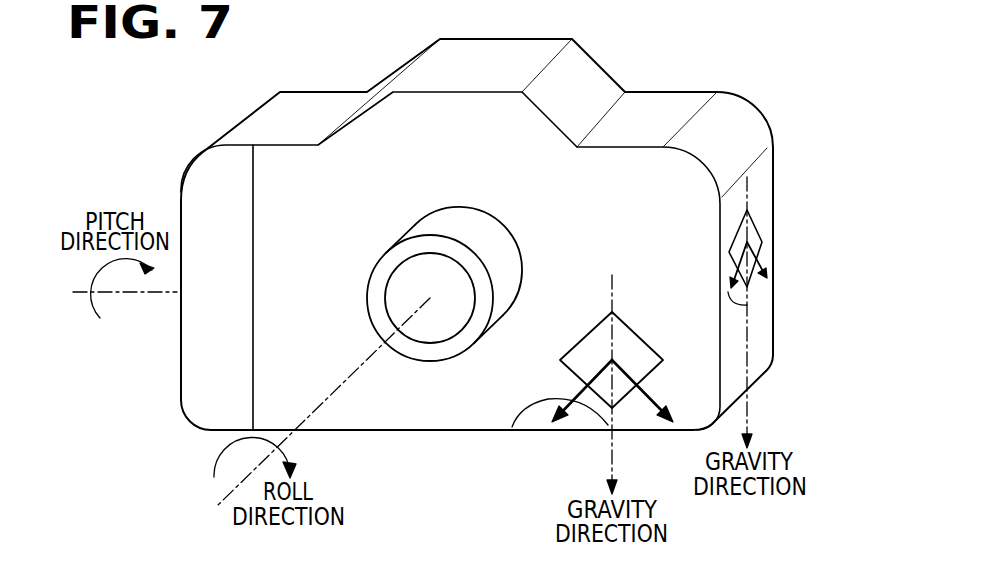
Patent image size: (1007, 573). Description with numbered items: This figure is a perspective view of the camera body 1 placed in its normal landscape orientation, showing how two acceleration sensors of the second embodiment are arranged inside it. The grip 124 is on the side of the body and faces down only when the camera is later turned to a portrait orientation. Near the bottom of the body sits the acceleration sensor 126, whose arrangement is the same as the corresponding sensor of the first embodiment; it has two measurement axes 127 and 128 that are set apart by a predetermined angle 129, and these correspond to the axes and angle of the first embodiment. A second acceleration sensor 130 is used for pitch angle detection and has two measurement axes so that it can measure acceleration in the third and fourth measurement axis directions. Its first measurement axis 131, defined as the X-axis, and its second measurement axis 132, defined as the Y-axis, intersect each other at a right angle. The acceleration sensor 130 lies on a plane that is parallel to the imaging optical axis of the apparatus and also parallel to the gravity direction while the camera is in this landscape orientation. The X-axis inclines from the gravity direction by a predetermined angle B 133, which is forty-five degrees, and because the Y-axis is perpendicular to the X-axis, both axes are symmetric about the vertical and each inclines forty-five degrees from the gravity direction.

The camera body 1 is at (297, 197).
The grip 124 is at (218, 235).
The acceleration sensor 126 is at (655, 367).
The measurement axis 127 is at (512, 427).
The measurement axis 128 is at (647, 398).
The angle 129 is at (583, 395).
The acceleration sensor 130 is at (737, 233).
The first measurement axis 131 is at (737, 276).
The second measurement axis 132 is at (760, 258).
The predetermined angle B 133 is at (722, 316).